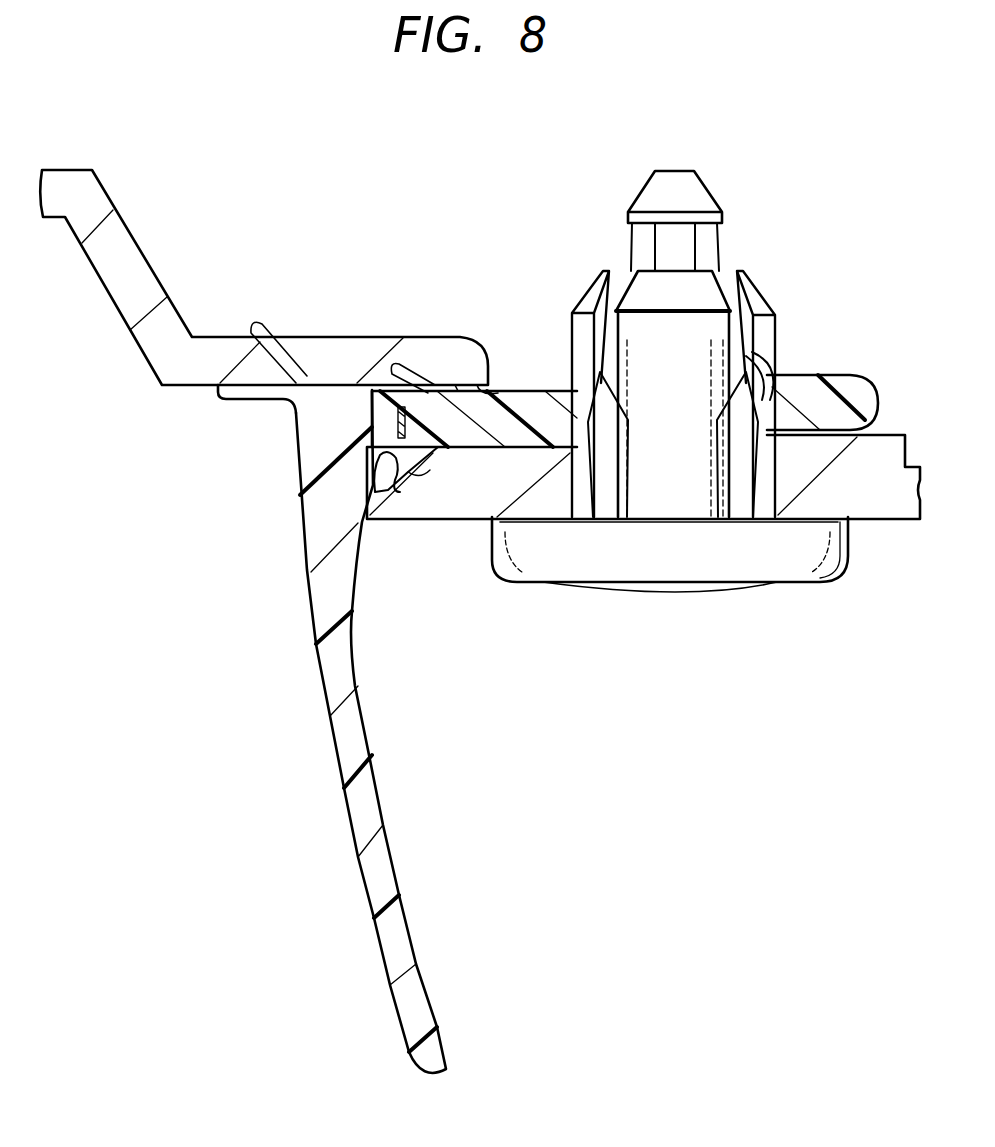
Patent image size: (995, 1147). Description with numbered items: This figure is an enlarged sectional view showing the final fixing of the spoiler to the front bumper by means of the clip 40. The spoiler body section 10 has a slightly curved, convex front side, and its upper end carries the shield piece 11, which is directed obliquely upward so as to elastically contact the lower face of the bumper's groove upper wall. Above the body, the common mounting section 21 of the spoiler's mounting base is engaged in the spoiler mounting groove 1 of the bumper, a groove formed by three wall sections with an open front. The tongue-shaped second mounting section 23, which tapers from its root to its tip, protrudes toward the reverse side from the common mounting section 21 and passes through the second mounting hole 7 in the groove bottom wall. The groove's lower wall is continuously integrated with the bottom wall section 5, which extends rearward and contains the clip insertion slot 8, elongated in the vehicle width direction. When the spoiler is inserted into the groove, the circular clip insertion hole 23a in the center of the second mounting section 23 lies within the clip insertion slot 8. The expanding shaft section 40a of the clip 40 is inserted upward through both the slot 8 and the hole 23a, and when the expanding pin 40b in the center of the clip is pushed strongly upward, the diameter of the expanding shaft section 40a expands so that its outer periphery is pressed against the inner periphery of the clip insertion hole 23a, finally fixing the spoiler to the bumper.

The spoiler mounting groove 1 is at (335, 383).
The bottom wall section 5 is at (893, 509).
The second mounting hole 7 is at (510, 385).
The clip insertion slot 8 is at (593, 520).
The spoiler body section 10 is at (362, 837).
The shield piece 11 is at (254, 400).
The common mounting section 21 is at (405, 482).
The second mounting section 23 is at (840, 378).
The clip insertion hole 23a is at (772, 356).
The clip 40 is at (670, 307).
The expanding shaft section 40a is at (750, 278).
The expanding pin 40b is at (680, 178).